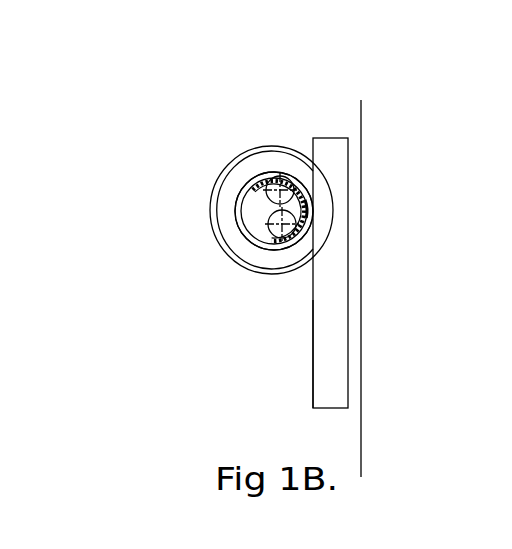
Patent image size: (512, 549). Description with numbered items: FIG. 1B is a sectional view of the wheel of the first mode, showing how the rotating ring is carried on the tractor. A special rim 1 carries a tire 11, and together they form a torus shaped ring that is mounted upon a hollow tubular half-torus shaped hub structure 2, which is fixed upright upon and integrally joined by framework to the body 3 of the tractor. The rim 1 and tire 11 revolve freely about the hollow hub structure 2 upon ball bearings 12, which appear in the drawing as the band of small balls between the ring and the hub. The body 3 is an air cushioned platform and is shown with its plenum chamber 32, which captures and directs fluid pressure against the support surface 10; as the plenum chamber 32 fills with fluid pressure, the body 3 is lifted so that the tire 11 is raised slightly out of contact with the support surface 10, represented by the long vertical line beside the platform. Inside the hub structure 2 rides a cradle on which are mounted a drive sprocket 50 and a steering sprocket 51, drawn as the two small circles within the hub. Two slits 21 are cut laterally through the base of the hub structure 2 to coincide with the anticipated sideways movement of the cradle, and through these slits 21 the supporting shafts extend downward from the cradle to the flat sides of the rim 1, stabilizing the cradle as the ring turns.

The rim 1 is at (227, 248).
The hub structure 2 is at (221, 232).
The body 3 is at (273, 356).
The support surface 10 is at (321, 261).
The tire 11 is at (217, 226).
The ball bearings 12 is at (232, 195).
The slits 21 is at (320, 204).
The plenum chamber 32 is at (370, 273).
The drive sprocket 50 is at (250, 135).
The steering sprocket 51 is at (227, 290).